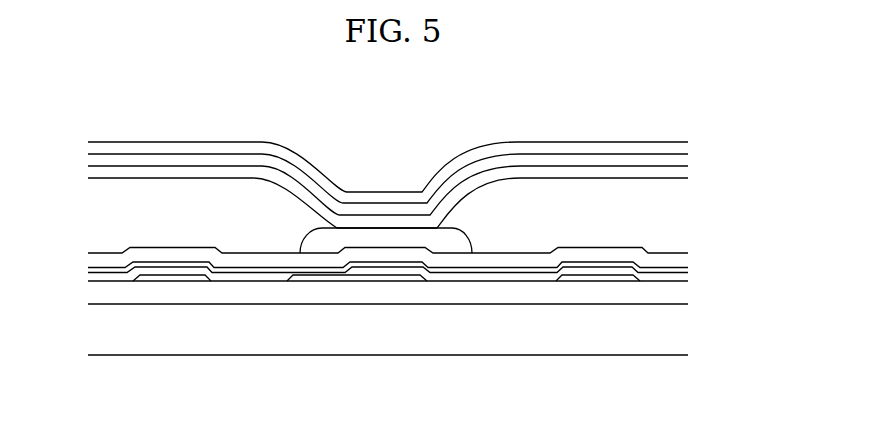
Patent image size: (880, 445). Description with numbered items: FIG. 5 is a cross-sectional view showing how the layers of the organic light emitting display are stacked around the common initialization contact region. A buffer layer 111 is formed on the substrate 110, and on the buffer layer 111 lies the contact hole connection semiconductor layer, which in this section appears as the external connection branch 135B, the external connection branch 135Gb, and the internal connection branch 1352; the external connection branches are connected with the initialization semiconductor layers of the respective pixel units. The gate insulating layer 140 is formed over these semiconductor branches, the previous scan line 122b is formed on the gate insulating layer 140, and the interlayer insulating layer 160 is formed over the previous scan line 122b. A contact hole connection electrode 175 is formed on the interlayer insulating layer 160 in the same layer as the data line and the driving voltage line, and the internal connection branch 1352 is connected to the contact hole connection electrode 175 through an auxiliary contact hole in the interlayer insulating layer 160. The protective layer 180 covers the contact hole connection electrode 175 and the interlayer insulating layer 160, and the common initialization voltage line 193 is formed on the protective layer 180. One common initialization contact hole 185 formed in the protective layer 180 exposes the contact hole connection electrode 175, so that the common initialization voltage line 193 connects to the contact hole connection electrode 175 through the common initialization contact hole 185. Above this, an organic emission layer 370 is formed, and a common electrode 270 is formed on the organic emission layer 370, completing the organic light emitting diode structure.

The substrate 110 is at (207, 345).
The buffer layer 111 is at (255, 295).
The external connection branch 135B is at (148, 279).
The internal connection branch 1352 is at (377, 282).
The external connection branch 135Gb is at (578, 278).
The gate insulating layer 140 is at (310, 280).
The previous scan line 122b is at (462, 270).
The interlayer insulating layer 160 is at (520, 260).
The contact hole connection electrode 175 is at (360, 238).
The protective layer 180 is at (173, 195).
The common initialization contact hole 185 is at (478, 222).
The common initialization voltage line 193 is at (405, 222).
The organic emission layer 370 is at (568, 160).
The common electrode 270 is at (635, 147).